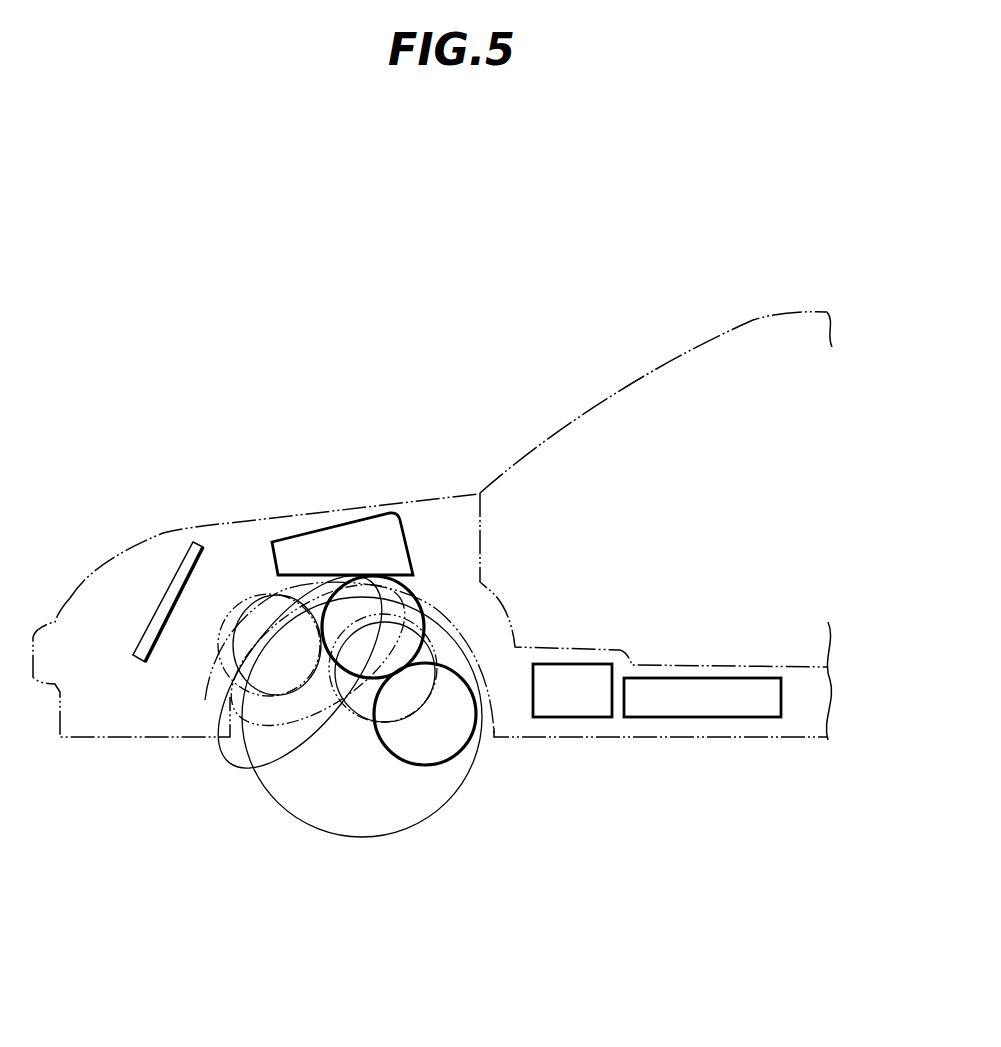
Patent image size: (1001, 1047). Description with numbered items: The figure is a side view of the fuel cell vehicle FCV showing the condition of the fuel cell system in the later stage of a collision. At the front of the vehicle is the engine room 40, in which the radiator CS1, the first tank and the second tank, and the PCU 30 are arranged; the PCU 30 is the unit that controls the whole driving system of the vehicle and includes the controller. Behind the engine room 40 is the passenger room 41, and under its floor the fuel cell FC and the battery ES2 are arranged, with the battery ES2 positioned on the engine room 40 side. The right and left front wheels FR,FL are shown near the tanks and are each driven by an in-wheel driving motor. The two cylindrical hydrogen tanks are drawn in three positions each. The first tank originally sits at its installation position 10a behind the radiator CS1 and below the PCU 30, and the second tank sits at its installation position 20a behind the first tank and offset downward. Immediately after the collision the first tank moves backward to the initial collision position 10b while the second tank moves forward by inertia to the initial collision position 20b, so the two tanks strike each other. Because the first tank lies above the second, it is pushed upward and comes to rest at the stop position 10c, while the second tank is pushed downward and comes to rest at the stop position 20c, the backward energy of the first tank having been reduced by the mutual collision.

The fuel cell vehicle FCV is at (565, 275).
The engine room 40 is at (236, 548).
The passenger room 41 is at (669, 405).
The radiator CS1 is at (174, 588).
The PCU (power control unit) 30 is at (340, 540).
The installation position 10a is at (235, 637).
The initial collision position 10b is at (318, 670).
The stop position 10c is at (403, 612).
The installation position 20a is at (432, 715).
The initial collision position 20b is at (340, 690).
The stop position 20c is at (438, 742).
The right front wheel and left front wheel FR,FL is at (458, 786).
The battery ES2 is at (581, 702).
The fuel cell FC is at (719, 700).